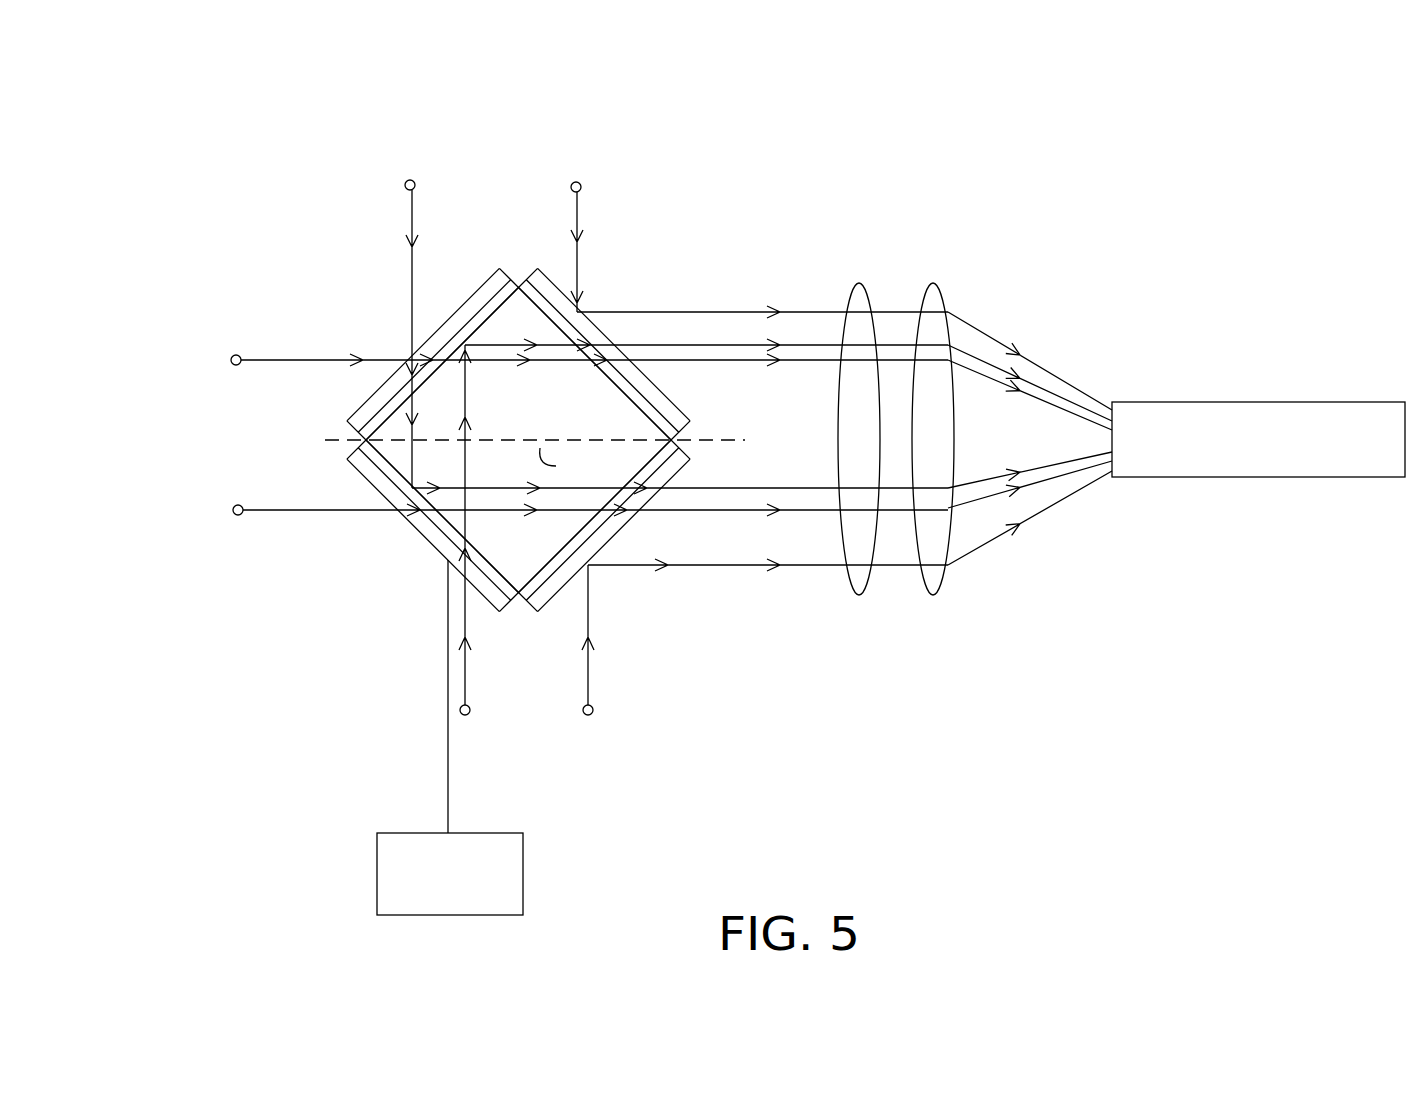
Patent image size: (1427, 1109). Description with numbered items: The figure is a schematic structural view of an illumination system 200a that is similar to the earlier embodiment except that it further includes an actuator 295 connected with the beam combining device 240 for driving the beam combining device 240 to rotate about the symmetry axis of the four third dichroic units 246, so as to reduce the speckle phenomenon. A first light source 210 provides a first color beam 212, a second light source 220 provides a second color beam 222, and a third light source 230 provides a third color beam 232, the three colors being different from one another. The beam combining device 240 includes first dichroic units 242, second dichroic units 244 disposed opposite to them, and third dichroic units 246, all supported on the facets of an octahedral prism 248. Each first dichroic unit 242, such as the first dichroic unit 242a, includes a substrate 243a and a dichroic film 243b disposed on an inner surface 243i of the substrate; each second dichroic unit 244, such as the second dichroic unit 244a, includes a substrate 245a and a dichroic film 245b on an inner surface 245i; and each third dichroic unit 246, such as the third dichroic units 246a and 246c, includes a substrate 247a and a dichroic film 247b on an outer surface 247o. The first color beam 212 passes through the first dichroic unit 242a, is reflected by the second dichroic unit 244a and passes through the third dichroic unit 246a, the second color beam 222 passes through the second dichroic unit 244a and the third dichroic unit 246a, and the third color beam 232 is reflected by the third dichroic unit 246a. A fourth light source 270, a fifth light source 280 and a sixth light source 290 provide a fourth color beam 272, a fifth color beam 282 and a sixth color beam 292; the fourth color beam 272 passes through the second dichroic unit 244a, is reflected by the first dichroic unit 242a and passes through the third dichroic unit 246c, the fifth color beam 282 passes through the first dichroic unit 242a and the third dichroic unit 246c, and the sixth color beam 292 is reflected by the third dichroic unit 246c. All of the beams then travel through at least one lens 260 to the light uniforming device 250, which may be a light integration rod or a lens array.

The illumination system 200a is at (1405, 852).
The first light source 210 is at (405, 185).
The first color beam 212 is at (410, 229).
The second light source 220 is at (238, 516).
The second color beam 222 is at (355, 513).
The third light source 230 is at (594, 711).
The third color beam 232 is at (590, 657).
The beam combining device 240 is at (484, 459).
The first dichroic unit 242 is at (316, 350).
The first dichroic unit 242a is at (316, 350).
The substrate 243a is at (392, 414).
The dichroic film 243b is at (390, 460).
The inner surface 243i is at (365, 462).
The second dichroic unit 244 is at (462, 631).
The second dichroic unit 244a is at (462, 631).
The substrate 245a is at (484, 592).
The dichroic film 245b is at (506, 600).
The inner surface 245i is at (498, 552).
The third dichroic unit 246 is at (653, 354).
The third dichroic unit 246a is at (778, 255).
The third dichroic unit 246c is at (569, 152).
The substrate 247a is at (525, 290).
The dichroic film 247b is at (565, 283).
The outer surface 247o is at (690, 478).
The octahedral prism 248 is at (497, 323).
The light uniforming device 250 is at (1253, 415).
The lens 260 is at (867, 583).
The fourth light source 270 is at (460, 711).
The fourth color beam 272 is at (465, 657).
The fifth light source 280 is at (236, 355).
The fifth color beam 282 is at (322, 358).
The sixth light source 290 is at (582, 187).
The sixth color beam 292 is at (578, 223).
The actuator 295 is at (523, 872).